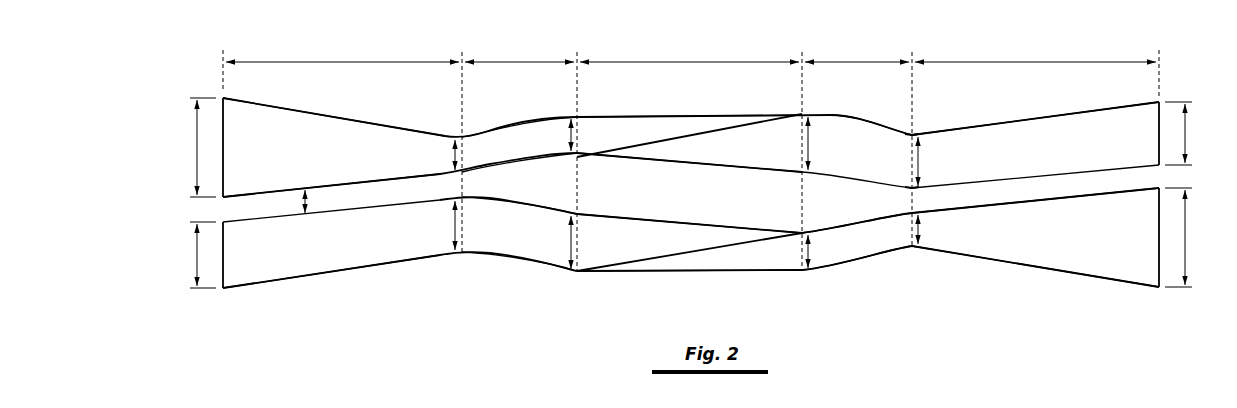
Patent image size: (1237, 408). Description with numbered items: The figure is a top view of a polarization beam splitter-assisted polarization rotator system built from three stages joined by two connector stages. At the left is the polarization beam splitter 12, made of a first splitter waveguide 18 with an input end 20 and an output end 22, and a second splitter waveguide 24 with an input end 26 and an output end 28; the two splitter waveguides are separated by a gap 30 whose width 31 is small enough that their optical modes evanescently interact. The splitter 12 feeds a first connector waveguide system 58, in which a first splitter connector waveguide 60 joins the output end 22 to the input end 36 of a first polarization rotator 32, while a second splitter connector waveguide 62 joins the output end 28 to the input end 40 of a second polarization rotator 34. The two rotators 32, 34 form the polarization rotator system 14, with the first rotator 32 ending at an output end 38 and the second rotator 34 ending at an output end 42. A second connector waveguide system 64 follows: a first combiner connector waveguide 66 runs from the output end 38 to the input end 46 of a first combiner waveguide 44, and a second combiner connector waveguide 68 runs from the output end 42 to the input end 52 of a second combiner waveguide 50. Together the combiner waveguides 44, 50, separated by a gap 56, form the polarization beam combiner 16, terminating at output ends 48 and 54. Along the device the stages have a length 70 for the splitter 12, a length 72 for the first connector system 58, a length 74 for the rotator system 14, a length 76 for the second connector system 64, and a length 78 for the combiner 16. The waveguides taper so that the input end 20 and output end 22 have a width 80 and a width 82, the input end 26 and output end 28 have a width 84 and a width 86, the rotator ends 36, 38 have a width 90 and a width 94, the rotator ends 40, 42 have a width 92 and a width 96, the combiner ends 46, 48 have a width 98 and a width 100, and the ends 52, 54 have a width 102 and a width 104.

The polarization beam splitter 12 is at (399, 55).
The polarization rotator system 14 is at (764, 53).
The polarization beam combiner 16 is at (1097, 39).
The first splitter waveguide 18 is at (317, 112).
The input end of first splitter waveguide 20 is at (221, 118).
The output end of first splitter waveguide 22 is at (466, 141).
The second splitter waveguide 24 is at (347, 271).
The input end of second splitter waveguide 26 is at (221, 274).
The output end of second splitter waveguide 28 is at (467, 222).
The gap 30 is at (270, 192).
The width of gap 31 is at (310, 201).
The first polarization rotator 32 is at (652, 115).
The second polarization rotator 34 is at (698, 272).
The input end of first rotator 36 is at (580, 151).
The output end of first rotator 38 is at (798, 164).
The input end of second rotator 40 is at (579, 249).
The output end of second rotator 42 is at (797, 244).
The first combiner waveguide 44 is at (1057, 114).
The input end of first combiner waveguide 46 is at (910, 171).
The output end of first combiner waveguide 48 is at (1161, 118).
The second combiner waveguide 50 is at (1035, 267).
The input end of second combiner waveguide 52 is at (897, 241).
The output end of second combiner waveguide 54 is at (1161, 262).
The gap 56 is at (1088, 193).
The first connector waveguide system 58 is at (552, 53).
The first splitter connector waveguide 60 is at (525, 124).
The second splitter connector waveguide 62 is at (533, 263).
The second connector waveguide system 64 is at (887, 46).
The first combiner connector waveguide 66 is at (874, 116).
The second combiner connector waveguide 68 is at (856, 260).
The length of beam splitter 70 is at (313, 62).
The length of first connector waveguide system 72 is at (496, 62).
The length of rotator system 74 is at (665, 62).
The length of second connector waveguide system 76 is at (834, 61).
The length of beam combiner 78 is at (1009, 60).
The width of input end of first splitter waveguide 80 is at (197, 148).
The width of output end of first splitter waveguide 82 is at (455, 156).
The width of input end of second splitter waveguide 84 is at (197, 257).
The width of output end of second splitter waveguide 86 is at (455, 232).
The width of input end of first rotator 90 is at (571, 133).
The width of input end of second rotator 92 is at (571, 234).
The width of output end of first rotator 94 is at (808, 148).
The width of output end of second rotator 96 is at (808, 251).
The width of input end of first combiner waveguide 98 is at (918, 157).
The width of output end of first combiner waveguide 100 is at (1185, 126).
The width of input end of second combiner waveguide 102 is at (918, 230).
The width of output end of second combiner waveguide 104 is at (1185, 238).